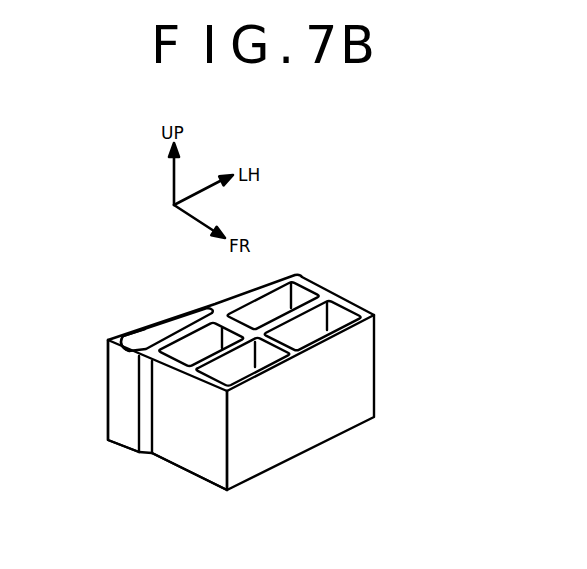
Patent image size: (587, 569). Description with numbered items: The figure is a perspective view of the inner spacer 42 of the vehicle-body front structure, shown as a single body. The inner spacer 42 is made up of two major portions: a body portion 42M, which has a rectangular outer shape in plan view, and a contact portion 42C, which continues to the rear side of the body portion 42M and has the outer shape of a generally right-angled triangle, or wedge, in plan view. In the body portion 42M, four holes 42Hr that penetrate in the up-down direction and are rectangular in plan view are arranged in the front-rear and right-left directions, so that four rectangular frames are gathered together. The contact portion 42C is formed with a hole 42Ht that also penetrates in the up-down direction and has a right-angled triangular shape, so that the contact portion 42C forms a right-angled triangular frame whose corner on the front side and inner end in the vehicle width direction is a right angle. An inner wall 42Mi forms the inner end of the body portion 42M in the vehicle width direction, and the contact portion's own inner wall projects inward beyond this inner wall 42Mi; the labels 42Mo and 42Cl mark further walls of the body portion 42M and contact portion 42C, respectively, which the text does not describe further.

The inner spacer 42 is at (380, 272).
The body portion 42M is at (315, 280).
The outer wall portion of main body 42Mo is at (363, 310).
The inner wall 42Mi is at (193, 453).
The holes 42Hr is at (194, 356).
The contact portion 42C is at (175, 312).
The hole 42Ht is at (142, 340).
The lower cutout wall 42Cl is at (123, 433).